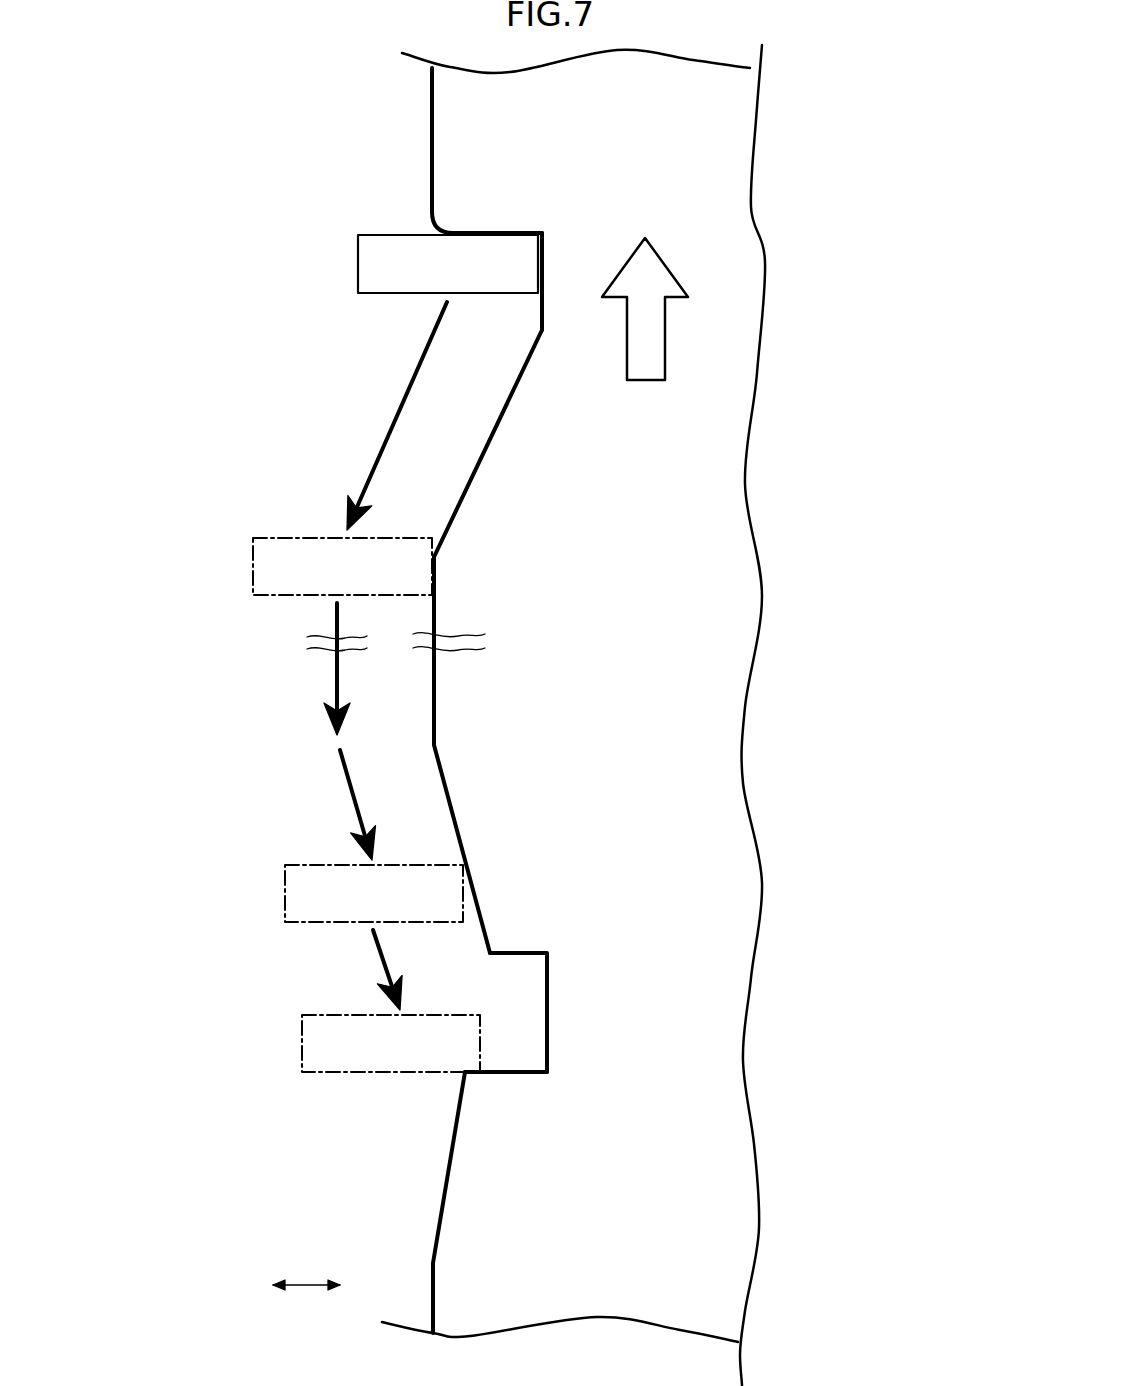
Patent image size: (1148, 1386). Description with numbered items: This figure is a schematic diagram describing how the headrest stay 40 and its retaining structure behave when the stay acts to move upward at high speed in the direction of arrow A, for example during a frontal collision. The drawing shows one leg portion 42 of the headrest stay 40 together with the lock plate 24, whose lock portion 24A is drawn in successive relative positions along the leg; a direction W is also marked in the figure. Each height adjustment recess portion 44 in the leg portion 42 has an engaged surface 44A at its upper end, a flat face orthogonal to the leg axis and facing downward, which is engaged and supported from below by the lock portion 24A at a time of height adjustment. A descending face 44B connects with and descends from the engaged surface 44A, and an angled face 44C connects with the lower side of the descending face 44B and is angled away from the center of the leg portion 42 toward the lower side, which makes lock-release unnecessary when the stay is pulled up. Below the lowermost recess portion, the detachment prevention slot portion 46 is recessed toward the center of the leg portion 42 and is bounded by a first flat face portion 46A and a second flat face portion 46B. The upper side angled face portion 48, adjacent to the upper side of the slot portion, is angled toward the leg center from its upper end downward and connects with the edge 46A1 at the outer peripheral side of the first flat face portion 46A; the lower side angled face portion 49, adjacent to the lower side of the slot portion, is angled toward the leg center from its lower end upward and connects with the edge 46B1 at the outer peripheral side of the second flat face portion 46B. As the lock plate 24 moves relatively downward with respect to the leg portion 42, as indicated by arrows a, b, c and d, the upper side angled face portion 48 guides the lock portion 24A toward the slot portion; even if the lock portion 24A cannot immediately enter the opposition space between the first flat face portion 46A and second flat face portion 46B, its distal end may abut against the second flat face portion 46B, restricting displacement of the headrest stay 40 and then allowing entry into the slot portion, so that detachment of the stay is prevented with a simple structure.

The headrest stay 40 is at (357, 88).
The leg portion 42 is at (430, 156).
The lock plate 24 is at (397, 233).
The lock portion 24A is at (493, 294).
The height adjustment recess portion 44 is at (526, 364).
The engaged surface 44A is at (490, 238).
The descending face 44B is at (522, 268).
The angled face 44C is at (474, 437).
The upper side angled face portion 48 is at (446, 849).
The detachment prevention slot portion 46 is at (479, 1015).
The first flat face portion 46A is at (522, 966).
The edge at the outer peripheral side of the first flat face portion 46A1 is at (493, 962).
The second flat face portion 46B is at (508, 1068).
The edge at the outer peripheral side of the second flat face portion 46B1 is at (406, 1107).
The lower side angled face portion 49 is at (447, 1143).
The arrow a is at (402, 406).
The arrow b is at (332, 675).
The arrow c is at (354, 804).
The arrow d is at (382, 969).
The arrow A is at (668, 333).
The width direction W is at (310, 1283).